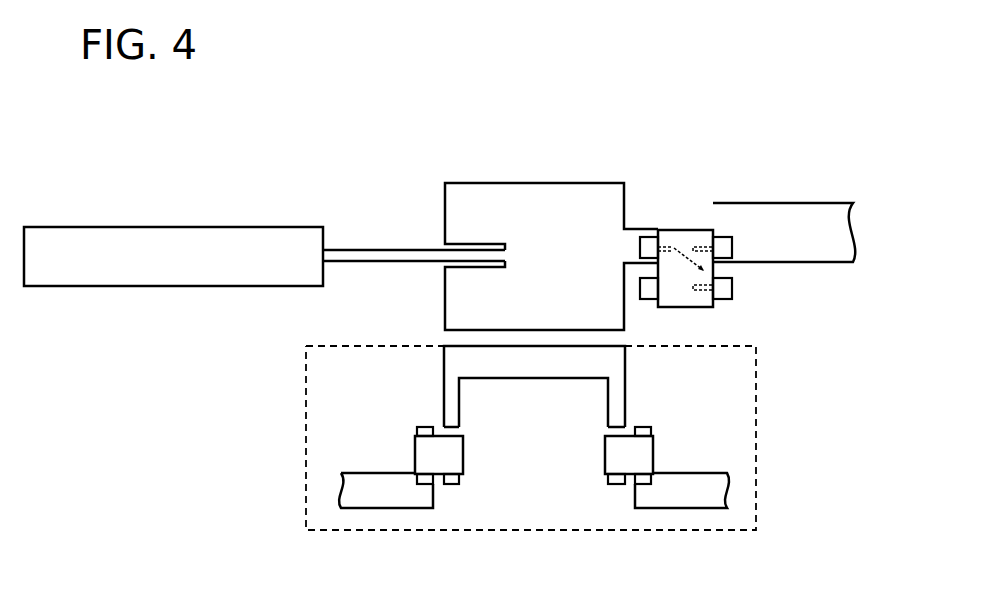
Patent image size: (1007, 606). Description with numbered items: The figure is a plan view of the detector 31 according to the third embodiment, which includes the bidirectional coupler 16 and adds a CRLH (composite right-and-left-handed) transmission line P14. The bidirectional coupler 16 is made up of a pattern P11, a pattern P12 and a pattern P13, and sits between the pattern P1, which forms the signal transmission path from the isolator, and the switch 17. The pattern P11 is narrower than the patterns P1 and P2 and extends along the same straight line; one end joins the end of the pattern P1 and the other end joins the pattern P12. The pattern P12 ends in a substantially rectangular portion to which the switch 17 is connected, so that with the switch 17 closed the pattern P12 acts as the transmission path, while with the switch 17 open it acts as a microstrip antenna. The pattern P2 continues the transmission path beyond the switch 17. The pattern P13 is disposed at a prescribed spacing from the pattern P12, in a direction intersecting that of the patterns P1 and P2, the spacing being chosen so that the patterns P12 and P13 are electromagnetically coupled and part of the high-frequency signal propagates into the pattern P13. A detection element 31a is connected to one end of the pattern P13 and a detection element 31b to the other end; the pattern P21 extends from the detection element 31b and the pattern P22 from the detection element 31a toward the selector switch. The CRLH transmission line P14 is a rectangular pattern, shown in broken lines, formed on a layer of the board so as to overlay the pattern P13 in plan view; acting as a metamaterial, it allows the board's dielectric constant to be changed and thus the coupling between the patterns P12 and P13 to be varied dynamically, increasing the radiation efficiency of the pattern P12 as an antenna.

The bidirectional coupler 16 is at (601, 141).
The switch 17 is at (686, 229).
The detector 31 is at (534, 449).
The detection element 31a is at (646, 457).
The detection element 31b is at (423, 456).
The pattern P1 is at (152, 240).
The pattern P2 is at (806, 217).
The pattern P11 is at (385, 255).
The pattern (first pattern) P12 is at (532, 197).
The pattern (second pattern) P13 is at (534, 364).
The CRLH transmission line (third pattern) P14 is at (306, 426).
The pattern P21 is at (385, 500).
The pattern P22 is at (676, 500).